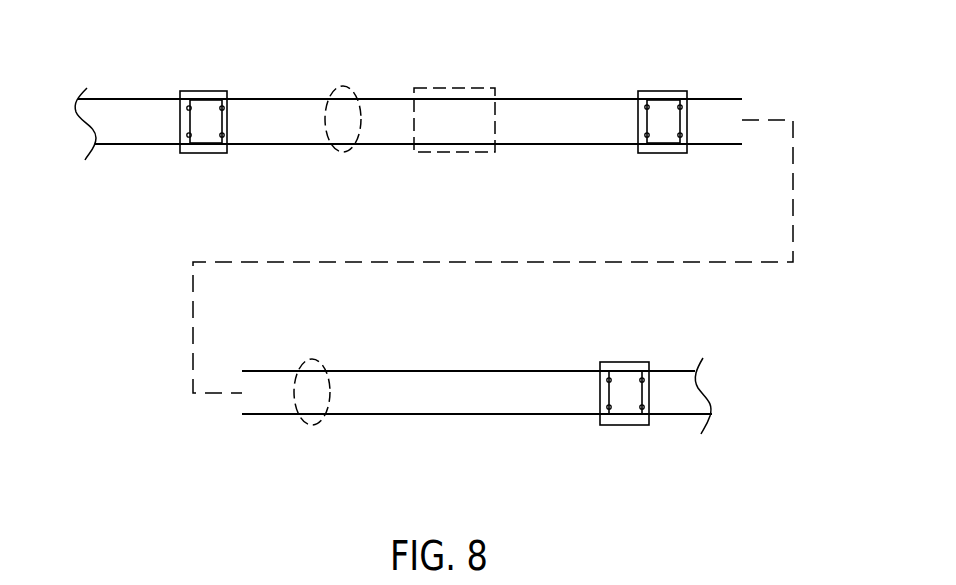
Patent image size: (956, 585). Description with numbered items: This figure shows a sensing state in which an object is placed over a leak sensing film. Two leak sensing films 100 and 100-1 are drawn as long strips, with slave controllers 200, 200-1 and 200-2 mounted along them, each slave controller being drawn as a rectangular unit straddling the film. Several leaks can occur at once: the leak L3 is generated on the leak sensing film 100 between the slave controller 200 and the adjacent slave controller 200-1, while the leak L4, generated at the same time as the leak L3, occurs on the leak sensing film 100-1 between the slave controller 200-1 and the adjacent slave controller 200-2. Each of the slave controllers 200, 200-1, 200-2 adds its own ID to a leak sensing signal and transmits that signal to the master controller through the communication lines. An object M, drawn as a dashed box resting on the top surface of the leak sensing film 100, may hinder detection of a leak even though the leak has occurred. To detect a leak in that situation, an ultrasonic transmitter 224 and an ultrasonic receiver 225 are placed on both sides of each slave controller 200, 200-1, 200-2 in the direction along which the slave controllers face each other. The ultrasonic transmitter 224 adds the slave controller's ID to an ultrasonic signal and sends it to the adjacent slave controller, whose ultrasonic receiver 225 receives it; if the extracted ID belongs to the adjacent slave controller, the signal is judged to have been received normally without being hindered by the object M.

The leak sensing film 100 is at (560, 110).
The leak sensing film 100-1 is at (458, 380).
The slave controller 200 is at (198, 90).
The slave controller 200-1 is at (667, 90).
The slave controller 200-2 is at (627, 362).
The ultrasonic transmitter 224 is at (187, 108).
The ultrasonic receiver 225 is at (188, 136).
The object M is at (445, 90).
The leak L3 is at (338, 153).
The leak L4 is at (308, 427).